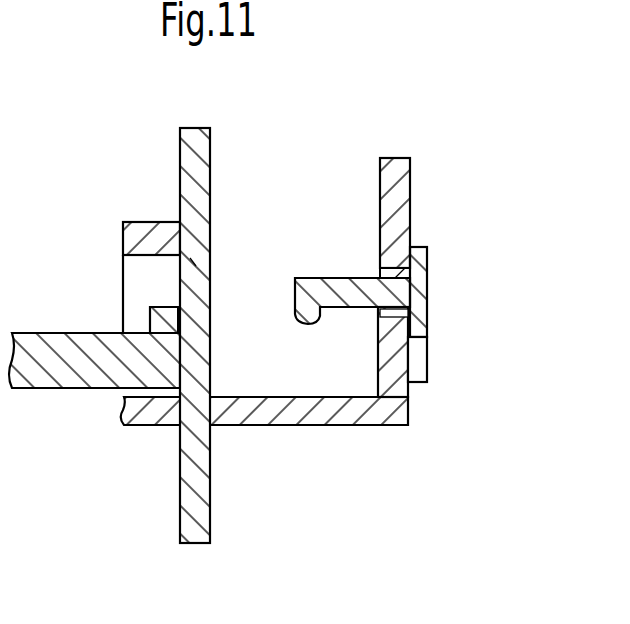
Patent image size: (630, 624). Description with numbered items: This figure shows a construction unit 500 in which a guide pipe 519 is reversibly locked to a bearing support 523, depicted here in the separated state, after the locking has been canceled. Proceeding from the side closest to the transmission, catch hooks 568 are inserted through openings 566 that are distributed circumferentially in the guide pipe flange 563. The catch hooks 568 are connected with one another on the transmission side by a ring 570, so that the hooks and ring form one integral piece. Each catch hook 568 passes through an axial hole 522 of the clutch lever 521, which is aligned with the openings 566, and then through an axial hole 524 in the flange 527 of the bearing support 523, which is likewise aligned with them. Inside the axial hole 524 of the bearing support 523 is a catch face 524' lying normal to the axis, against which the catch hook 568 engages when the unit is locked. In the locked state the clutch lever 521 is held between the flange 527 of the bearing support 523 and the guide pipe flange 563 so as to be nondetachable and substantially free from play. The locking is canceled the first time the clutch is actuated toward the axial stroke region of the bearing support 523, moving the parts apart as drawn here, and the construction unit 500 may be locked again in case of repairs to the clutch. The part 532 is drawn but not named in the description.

The construction unit 500 is at (347, 442).
The guide pipe 519 is at (267, 412).
The clutch lever 521 is at (200, 150).
The axial hole 522 is at (193, 263).
The bearing support 523 is at (46, 377).
The axial hole 524 is at (116, 244).
The catch face 524' is at (106, 285).
The flange 527 is at (155, 227).
The hook plate 532 is at (302, 293).
The guide pipe flange 563 is at (393, 192).
The opening 566 is at (396, 262).
The catch hook 568 is at (348, 278).
The ring 570 is at (415, 303).